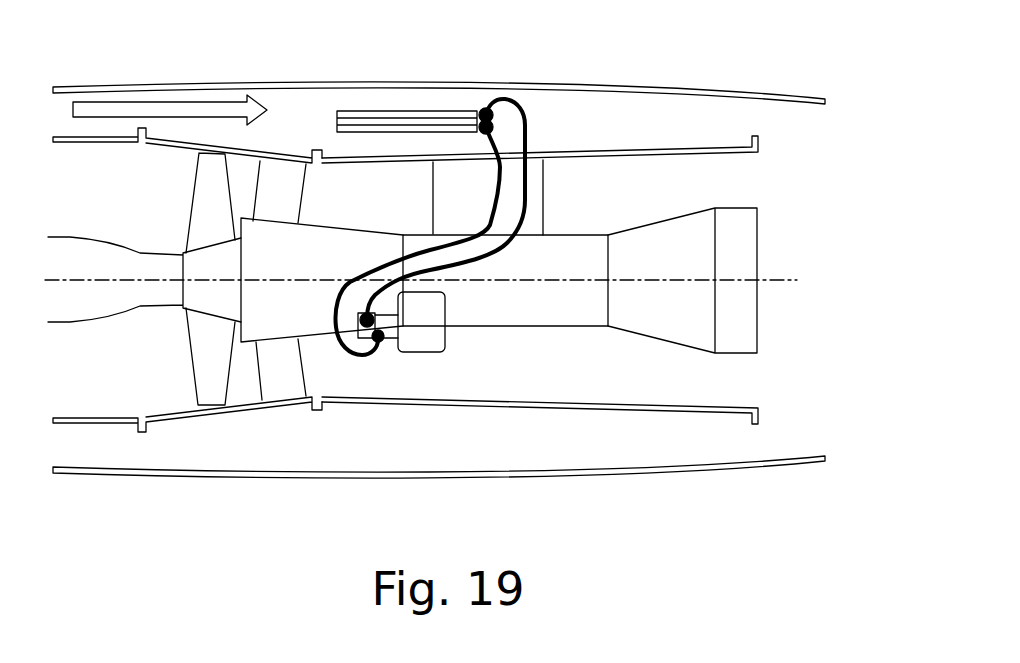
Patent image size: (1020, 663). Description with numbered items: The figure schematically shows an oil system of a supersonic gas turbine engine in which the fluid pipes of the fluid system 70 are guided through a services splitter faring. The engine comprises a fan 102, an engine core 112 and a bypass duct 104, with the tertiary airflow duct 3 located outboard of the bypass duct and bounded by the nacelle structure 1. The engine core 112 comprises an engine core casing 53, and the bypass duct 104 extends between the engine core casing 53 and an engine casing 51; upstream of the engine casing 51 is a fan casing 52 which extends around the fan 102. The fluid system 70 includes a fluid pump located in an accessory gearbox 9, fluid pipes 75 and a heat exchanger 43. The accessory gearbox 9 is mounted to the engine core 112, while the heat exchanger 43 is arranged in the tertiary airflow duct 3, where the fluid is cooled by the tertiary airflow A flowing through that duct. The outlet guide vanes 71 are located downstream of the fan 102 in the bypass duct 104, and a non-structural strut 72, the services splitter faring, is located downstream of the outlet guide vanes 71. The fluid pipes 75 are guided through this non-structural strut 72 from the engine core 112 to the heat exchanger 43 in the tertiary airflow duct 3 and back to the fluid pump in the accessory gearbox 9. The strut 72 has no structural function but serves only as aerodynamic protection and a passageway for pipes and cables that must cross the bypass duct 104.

The nacelle 1 is at (477, 78).
The tertiary airflow duct 3 is at (293, 107).
The tertiary airflow A is at (213, 90).
The heat exchanger 43 is at (402, 110).
The engine casing 51 is at (565, 157).
The fan casing 52 is at (230, 413).
The engine core casing 53 is at (480, 325).
The fluid system 70 is at (388, 349).
The outlet guide vanes 71 is at (308, 177).
The non-structural strut 72 is at (547, 182).
The fluid pipes 75 is at (527, 123).
The accessory gearbox 9 is at (447, 343).
The fan 102 is at (195, 190).
The bypass duct 104 is at (570, 389).
The engine core 112 is at (582, 307).